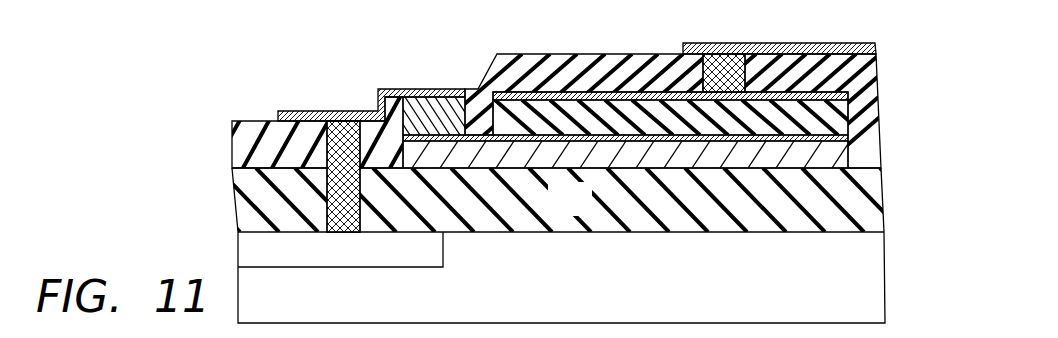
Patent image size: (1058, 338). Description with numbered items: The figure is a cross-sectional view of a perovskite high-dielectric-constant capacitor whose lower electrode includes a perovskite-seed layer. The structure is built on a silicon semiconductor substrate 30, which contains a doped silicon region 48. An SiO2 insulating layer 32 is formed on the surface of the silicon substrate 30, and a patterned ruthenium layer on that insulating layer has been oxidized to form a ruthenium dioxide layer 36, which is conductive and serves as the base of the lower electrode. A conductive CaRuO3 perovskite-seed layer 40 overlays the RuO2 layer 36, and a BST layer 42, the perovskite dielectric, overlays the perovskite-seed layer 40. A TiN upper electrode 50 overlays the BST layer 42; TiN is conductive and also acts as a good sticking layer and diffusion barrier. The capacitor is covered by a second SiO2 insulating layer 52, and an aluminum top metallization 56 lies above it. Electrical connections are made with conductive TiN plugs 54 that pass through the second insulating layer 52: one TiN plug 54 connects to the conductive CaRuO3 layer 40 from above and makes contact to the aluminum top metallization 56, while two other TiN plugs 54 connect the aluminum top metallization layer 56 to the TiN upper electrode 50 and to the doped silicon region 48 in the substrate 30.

The silicon semiconductor substrate 30 is at (589, 291).
The SiO2 insulating layer 32 is at (589, 212).
The ruthenium dioxide layer 36 is at (872, 167).
The CaRuO3 perovskite-seed layer 40 is at (398, 106).
The BST layer 42 is at (845, 118).
The doped silicon region 48 is at (238, 247).
The TiN upper electrode 50 is at (845, 95).
The second SiO2 insulating layer 52 is at (240, 143).
The TiN plug 54 is at (340, 121).
The aluminum top metallization 56 is at (283, 111).